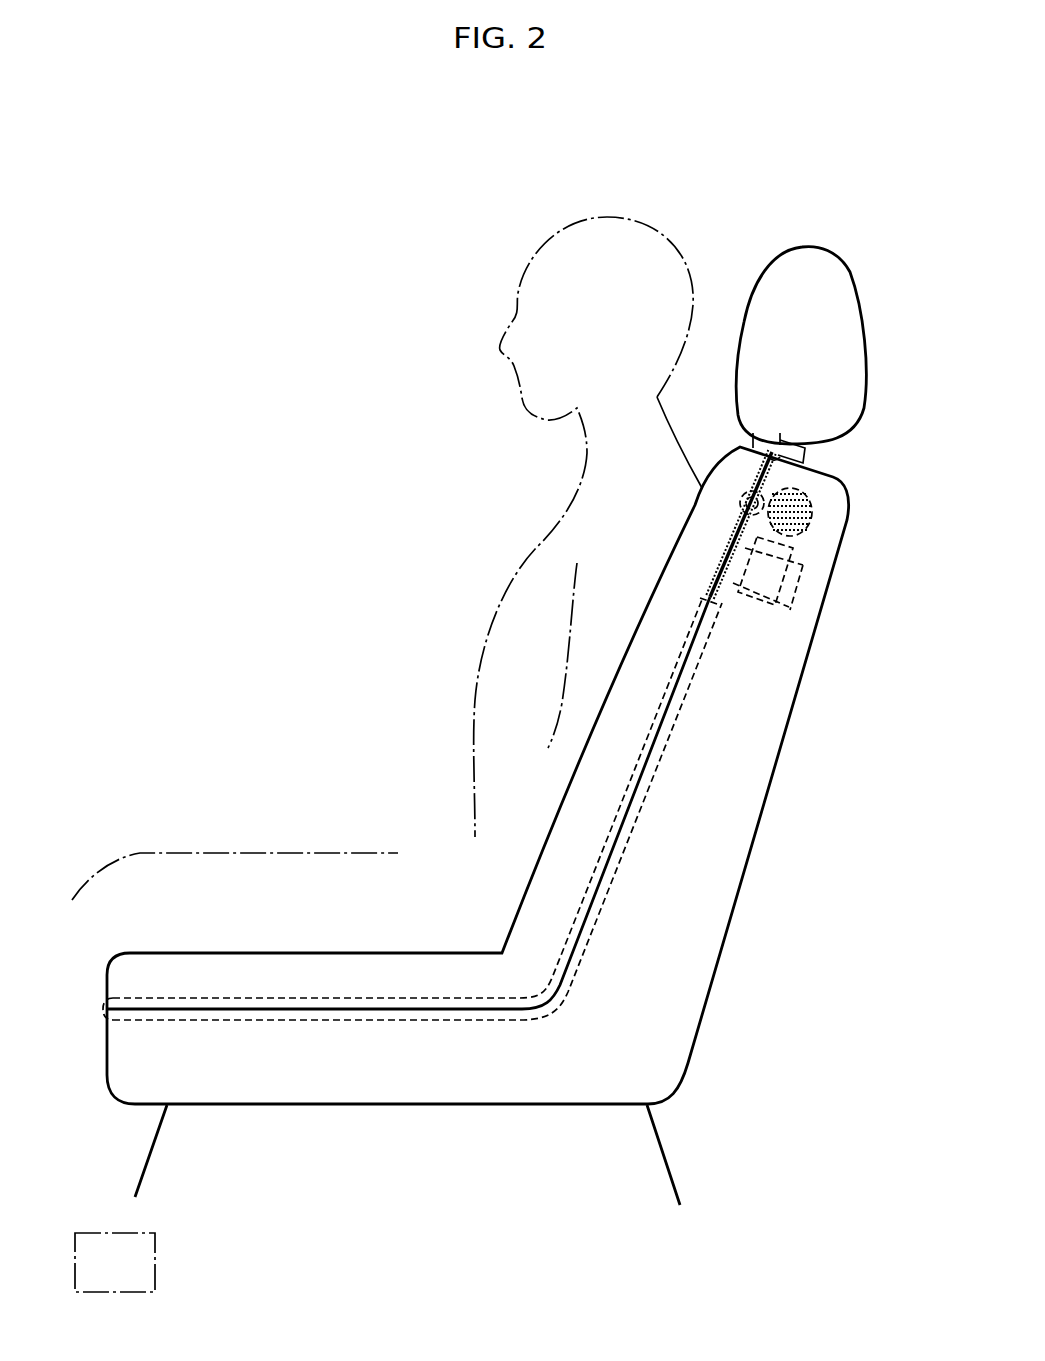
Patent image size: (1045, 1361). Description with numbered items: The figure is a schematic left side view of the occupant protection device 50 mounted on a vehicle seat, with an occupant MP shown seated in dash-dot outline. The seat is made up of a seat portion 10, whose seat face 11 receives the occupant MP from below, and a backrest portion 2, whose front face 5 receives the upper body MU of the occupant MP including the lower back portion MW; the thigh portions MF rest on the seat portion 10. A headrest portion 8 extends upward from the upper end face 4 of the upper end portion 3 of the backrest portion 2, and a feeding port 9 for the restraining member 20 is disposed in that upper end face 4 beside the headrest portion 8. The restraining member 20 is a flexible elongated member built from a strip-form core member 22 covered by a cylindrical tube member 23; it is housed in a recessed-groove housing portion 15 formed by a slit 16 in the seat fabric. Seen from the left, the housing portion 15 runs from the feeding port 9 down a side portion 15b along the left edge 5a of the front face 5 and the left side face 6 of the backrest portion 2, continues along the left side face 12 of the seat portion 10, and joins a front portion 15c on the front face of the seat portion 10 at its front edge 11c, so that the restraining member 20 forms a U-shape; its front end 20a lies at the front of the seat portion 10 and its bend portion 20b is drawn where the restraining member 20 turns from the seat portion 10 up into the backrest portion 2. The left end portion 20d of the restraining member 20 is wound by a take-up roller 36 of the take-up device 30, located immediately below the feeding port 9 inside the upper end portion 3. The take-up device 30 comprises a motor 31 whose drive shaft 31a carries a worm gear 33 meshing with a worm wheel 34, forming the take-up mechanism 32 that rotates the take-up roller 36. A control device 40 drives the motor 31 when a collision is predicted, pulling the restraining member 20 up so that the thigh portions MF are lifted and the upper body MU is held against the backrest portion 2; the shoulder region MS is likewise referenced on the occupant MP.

The backrest portion 2 is at (703, 878).
The left side face of the backrest portion 6 is at (689, 757).
The upper end portion 3 is at (727, 402).
The upper end face 4 is at (780, 425).
The front face 5 is at (546, 785).
The left edge of the front face 5a is at (462, 730).
The headrest portion 8 is at (793, 273).
The feeding port 9 is at (788, 450).
The seat portion 10 is at (368, 1080).
The seat face 11 is at (227, 938).
The front edge of the seat portion 11c is at (110, 935).
The left side face of the seat portion 12 is at (397, 1108).
The housing portion 15 is at (495, 1033).
The side portion of the housing portion 15b is at (387, 1130).
The front portion of the housing portion 15c is at (130, 1035).
The slit 16 is at (597, 885).
The restraining member 20 is at (862, 712).
The sheet member front end 20a is at (95, 1018).
The sheet member bend portion 20b is at (580, 933).
The left end portion of the restraining member 20d is at (775, 450).
The core member 22 is at (736, 602).
The tube member 23 is at (642, 790).
The take-up device 30 is at (790, 587).
The motor 31 is at (797, 573).
The drive shaft 31a is at (783, 543).
The take-up mechanism 32 is at (815, 498).
The worm gear 33 is at (807, 520).
The worm wheel 34 is at (723, 472).
The take-up roller 36 is at (740, 505).
The control device 40 is at (132, 1260).
The occupant protection device 50 is at (820, 397).
The occupant MP is at (482, 290).
The occupant shoulder MS is at (613, 563).
The upper body MU is at (530, 657).
The thigh portion MF is at (250, 883).
The lower back portion MW is at (463, 863).